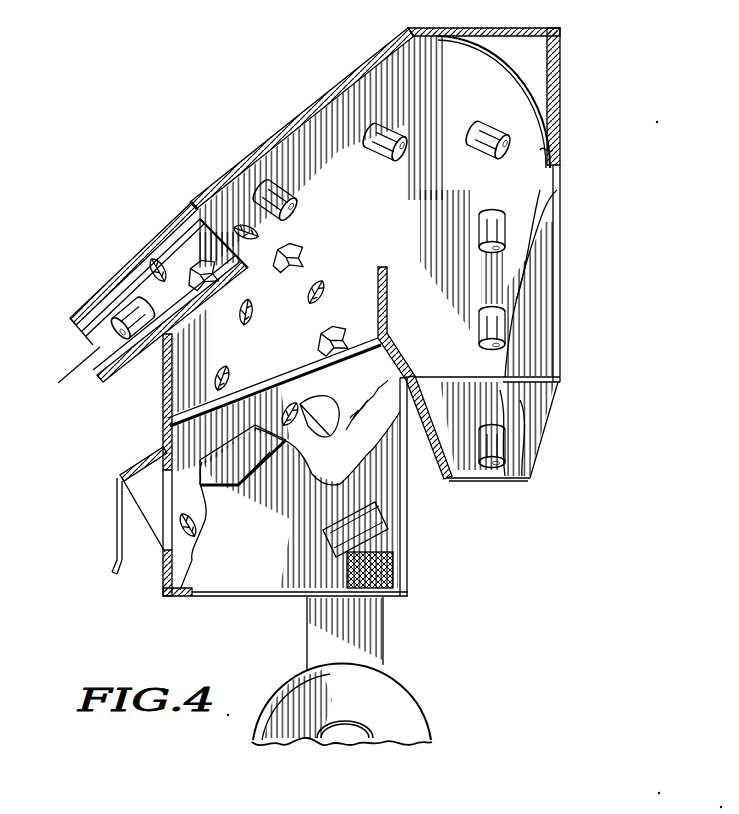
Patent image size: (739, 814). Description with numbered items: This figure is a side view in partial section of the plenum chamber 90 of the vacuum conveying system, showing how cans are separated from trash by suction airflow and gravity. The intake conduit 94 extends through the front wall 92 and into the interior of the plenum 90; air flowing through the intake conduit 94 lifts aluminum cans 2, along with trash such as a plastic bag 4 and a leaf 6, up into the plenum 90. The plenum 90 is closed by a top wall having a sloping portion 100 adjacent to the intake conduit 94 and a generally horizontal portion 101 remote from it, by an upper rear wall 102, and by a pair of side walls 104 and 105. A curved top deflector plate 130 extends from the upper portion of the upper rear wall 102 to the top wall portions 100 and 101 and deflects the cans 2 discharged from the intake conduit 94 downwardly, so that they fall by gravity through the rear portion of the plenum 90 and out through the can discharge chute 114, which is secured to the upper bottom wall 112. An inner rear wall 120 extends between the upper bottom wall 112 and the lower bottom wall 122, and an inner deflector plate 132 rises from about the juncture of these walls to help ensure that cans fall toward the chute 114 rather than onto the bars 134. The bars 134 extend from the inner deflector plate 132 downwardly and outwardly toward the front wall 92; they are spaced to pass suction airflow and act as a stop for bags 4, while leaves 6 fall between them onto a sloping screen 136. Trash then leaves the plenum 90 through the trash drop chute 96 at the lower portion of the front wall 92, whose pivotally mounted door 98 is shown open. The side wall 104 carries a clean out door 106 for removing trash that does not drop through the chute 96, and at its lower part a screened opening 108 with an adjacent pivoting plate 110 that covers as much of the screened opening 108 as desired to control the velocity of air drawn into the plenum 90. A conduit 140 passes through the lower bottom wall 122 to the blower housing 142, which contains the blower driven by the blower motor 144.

The plenum chamber 90 is at (281, 129).
The horizontal portion of top wall 101 is at (462, 30).
The sloping portion of top wall 100 is at (334, 100).
The upper rear wall 102 is at (556, 206).
The side wall 105 is at (548, 152).
The top deflector plate 130 is at (524, 68).
The side wall 104 is at (556, 322).
The intake conduit 94 is at (98, 300).
The aluminum can 2 is at (110, 334).
The leaf 6 is at (304, 296).
The plastic bag 4 is at (314, 342).
The inner deflector plate 132 is at (387, 304).
The upper bottom wall 112 is at (412, 378).
The inner rear wall 120 is at (436, 426).
The can discharge chute 114 is at (526, 446).
The front wall 92 is at (163, 392).
The bars 134 is at (314, 382).
The sloping screen 136 is at (306, 442).
The trash drop chute 96 is at (136, 458).
The door 98 is at (118, 520).
The clean out door 106 is at (243, 468).
The pivoting plate 110 is at (342, 536).
The screened opening 108 is at (346, 570).
The lower bottom wall 122 is at (172, 598).
The conduit 140 is at (386, 640).
The blower housing 142 is at (404, 718).
The blower motor 144 is at (362, 720).